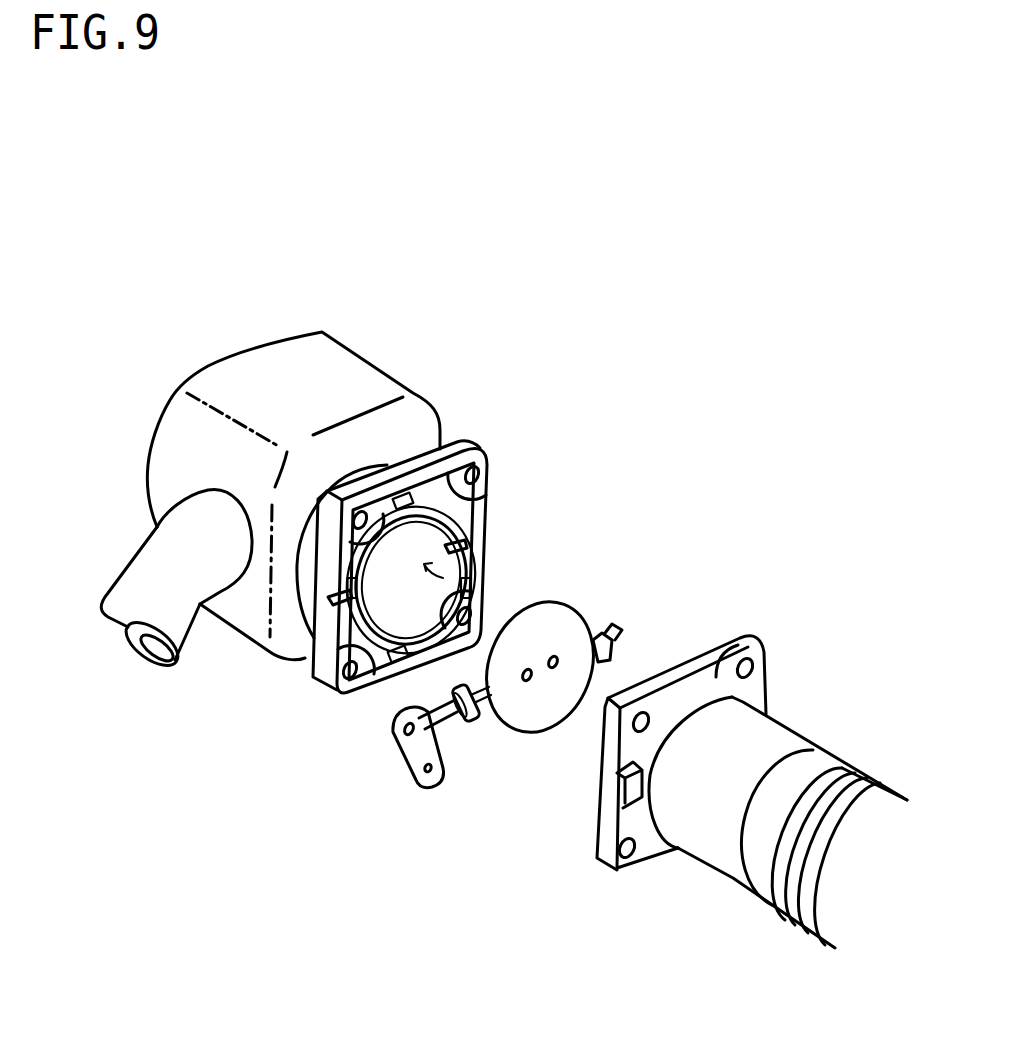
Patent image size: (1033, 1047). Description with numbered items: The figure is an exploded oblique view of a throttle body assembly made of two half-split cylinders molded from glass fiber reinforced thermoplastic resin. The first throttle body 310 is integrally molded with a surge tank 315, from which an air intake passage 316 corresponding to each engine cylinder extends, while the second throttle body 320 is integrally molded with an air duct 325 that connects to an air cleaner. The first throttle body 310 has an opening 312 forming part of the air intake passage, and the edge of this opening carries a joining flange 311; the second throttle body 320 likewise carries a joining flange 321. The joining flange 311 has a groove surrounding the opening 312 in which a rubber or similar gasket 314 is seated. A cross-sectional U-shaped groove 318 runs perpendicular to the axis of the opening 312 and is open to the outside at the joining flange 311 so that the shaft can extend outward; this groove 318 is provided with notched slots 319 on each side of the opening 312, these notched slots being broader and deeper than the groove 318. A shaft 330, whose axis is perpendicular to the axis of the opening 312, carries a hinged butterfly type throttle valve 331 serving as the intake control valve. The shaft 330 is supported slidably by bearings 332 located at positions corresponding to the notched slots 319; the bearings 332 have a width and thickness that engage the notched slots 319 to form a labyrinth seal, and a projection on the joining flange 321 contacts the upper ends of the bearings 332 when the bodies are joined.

The first throttle body 310 is at (285, 677).
The joining flange 311 is at (338, 697).
The opening 312 is at (472, 571).
The gasket 314 is at (469, 455).
The surge tank 315 is at (278, 350).
The air intake passage 316 is at (143, 555).
The cross-sectional U-shaped groove 318 is at (313, 677).
The notched slot 319 is at (458, 543).
The second throttle body 320 is at (682, 867).
The joining flange 321 is at (757, 640).
The air duct 325 is at (793, 915).
The shaft 330 is at (447, 774).
The throttle valve 331 is at (527, 720).
The bearing 332 is at (490, 722).